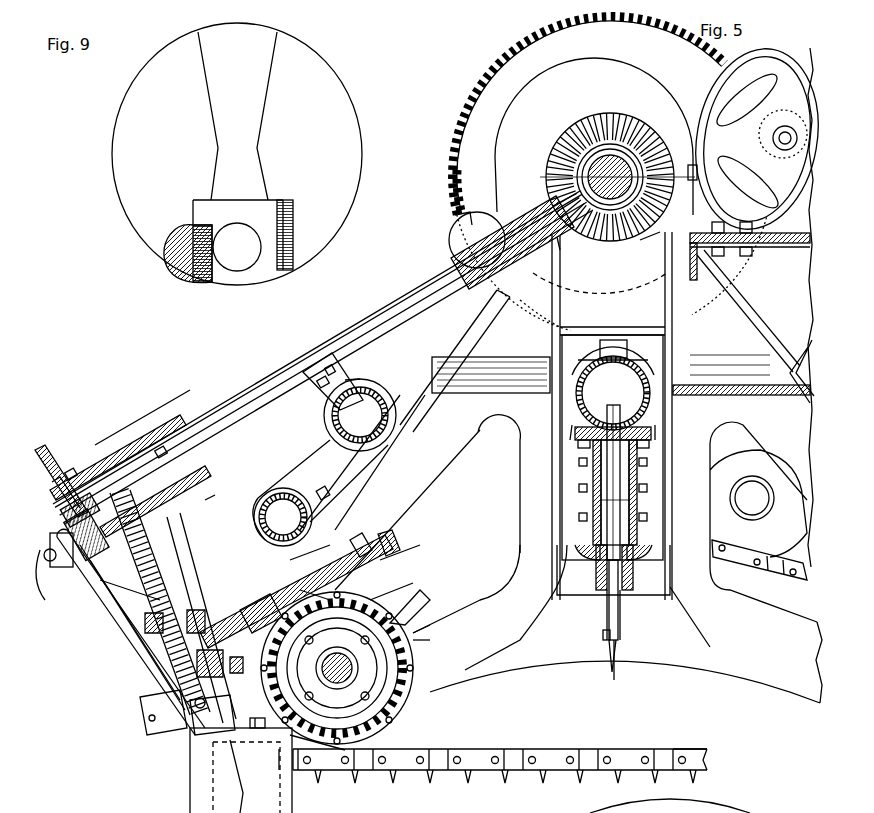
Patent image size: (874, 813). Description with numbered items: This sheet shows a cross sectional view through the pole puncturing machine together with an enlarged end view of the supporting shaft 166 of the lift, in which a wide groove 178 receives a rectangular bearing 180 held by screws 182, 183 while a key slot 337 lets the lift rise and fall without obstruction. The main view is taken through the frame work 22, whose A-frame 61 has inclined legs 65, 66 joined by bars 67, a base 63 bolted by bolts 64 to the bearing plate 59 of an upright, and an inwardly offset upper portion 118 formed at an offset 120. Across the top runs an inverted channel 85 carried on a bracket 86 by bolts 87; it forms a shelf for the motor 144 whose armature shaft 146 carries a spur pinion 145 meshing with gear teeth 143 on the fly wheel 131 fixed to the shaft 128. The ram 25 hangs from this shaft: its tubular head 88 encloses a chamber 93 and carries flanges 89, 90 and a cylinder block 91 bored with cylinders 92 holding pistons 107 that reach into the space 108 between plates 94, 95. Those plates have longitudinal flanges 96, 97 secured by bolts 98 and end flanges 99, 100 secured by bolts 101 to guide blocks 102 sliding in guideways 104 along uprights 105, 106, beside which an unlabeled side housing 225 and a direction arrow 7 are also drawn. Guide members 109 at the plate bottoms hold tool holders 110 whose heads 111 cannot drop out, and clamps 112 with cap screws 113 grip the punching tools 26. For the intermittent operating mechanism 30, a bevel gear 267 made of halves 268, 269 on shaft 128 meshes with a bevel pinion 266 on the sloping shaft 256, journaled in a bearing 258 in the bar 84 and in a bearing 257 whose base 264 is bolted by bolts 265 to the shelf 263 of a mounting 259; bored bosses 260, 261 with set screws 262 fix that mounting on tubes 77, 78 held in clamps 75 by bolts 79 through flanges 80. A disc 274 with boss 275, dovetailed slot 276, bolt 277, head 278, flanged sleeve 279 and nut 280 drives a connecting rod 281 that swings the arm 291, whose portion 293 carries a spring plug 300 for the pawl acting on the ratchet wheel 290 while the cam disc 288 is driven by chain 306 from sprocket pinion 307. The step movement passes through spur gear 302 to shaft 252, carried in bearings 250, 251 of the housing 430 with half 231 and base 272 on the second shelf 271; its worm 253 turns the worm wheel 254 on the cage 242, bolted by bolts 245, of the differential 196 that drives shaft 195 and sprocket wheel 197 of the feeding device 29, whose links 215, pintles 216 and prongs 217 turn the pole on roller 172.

In FIG. 9, the key slot 337 is at (230, 97).
In FIG. 9, the shaft 166 is at (137, 147).
In FIG. 9, the groove 178 is at (192, 200).
In FIG. 9, the bearing 180 is at (268, 213).
In FIG. 9, the screw 183 is at (293, 236).
In FIG. 9, the screw 182 is at (195, 274).
In FIG. 5, the fly wheel 131 is at (515, 72).
In FIG. 5, the gear teeth 143 is at (470, 100).
In FIG. 5, the motor 144 is at (717, 95).
In FIG. 5, the spur pinion 145 is at (747, 141).
In FIG. 5, the armature shaft 146 is at (786, 150).
In FIG. 5, the bevel gear 267 is at (580, 140).
In FIG. 5, the shaft 128 is at (615, 170).
In FIG. 5, the half of bevel gear 268 is at (565, 150).
In FIG. 5, the bevel pinion 266 is at (575, 237).
In FIG. 5, the half of bevel gear 269 is at (630, 232).
In FIG. 5, the bearing 258 is at (470, 212).
In FIG. 5, the bar 84 is at (460, 222).
In FIG. 5, the bolt 87 is at (745, 258).
In FIG. 5, the inverted channel 85 is at (790, 247).
In FIG. 5, the bracket 86 is at (760, 325).
In FIG. 5, the inclined leg 65 is at (775, 405).
In FIG. 5, the tubular head 88 is at (650, 393).
In FIG. 5, the ram 25 is at (660, 345).
In FIG. 5, the upper portion of A-frame 118 is at (510, 325).
In FIG. 5, the bore 92 is at (615, 417).
In FIG. 5, the chamber 93 is at (660, 373).
In FIG. 5, the flange 89 is at (578, 428).
In FIG. 5, the flange 90 is at (655, 432).
In FIG. 5, the bolt 98 is at (580, 425).
In FIG. 5, the longitudinal flange 96 is at (590, 440).
In FIG. 5, the longitudinal flange 97 is at (640, 443).
In FIG. 5, the cylinder block 91 is at (605, 455).
In FIG. 5, the bolt 101 is at (583, 462).
In FIG. 5, the piston 107 is at (585, 487).
In FIG. 5, the end flange 99 is at (583, 500).
In FIG. 5, the upright 105 is at (515, 520).
In FIG. 5, the space 108 is at (600, 530).
In FIG. 5, the guide block 102 is at (652, 505).
In FIG. 5, the end flange 100 is at (648, 540).
In FIG. 5, the side housing 225 is at (780, 480).
In FIG. 5, the upright 106 is at (715, 470).
In FIG. 5, the plate 95 is at (668, 555).
In FIG. 5, the plate 94 is at (575, 560).
In FIG. 5, the guide member 109 is at (605, 595).
In FIG. 5, the tool holder 110 is at (622, 612).
In FIG. 5, the head of tool holder 111 is at (600, 600).
In FIG. 5, the cap screw 113 is at (605, 640).
In FIG. 5, the clamp 112 is at (612, 660).
In FIG. 5, the punching tool 26 is at (622, 660).
In FIG. 5, the guideway 104 is at (573, 600).
In FIG. 5, the bar 67 is at (792, 655).
In FIG. 5, the inward offset 120 is at (485, 393).
In FIG. 5, the inclined leg 66 is at (445, 405).
In FIG. 5, the A-frame 61 is at (430, 408).
In FIG. 5, the shaft 256 is at (260, 385).
In FIG. 5, the bored boss 260 is at (380, 390).
In FIG. 5, the tube 78 is at (276, 490).
In FIG. 5, the mounting 259 is at (255, 505).
In FIG. 5, the bored boss 261 is at (290, 505).
In FIG. 5, the set screw 262 is at (327, 495).
In FIG. 5, the flange 80 is at (313, 360).
In FIG. 5, the clamp 75 is at (335, 370).
In FIG. 5, the bolt 79 is at (335, 350).
In FIG. 5, the tube 77 is at (362, 378).
In FIG. 5, the bearing 257 is at (137, 440).
In FIG. 5, the base 264 is at (195, 452).
In FIG. 5, the bolt 265 is at (165, 446).
In FIG. 5, the sprocket pinion 307 is at (102, 430).
In FIG. 5, the shelf 263 is at (205, 500).
In FIG. 5, the disc 274 is at (40, 452).
In FIG. 5, the boss 275 is at (62, 470).
In FIG. 5, the intermittent operating mechanism 30 is at (117, 597).
In FIG. 5, the dovetailed slot 276 is at (78, 535).
In FIG. 5, the bolt 277 is at (50, 563).
In FIG. 5, the dovetailed head 278 is at (92, 552).
In FIG. 5, the flanged sleeve 279 is at (112, 585).
In FIG. 5, the nut 280 is at (100, 600).
In FIG. 5, the connecting rod 281 is at (133, 653).
In FIG. 5, the disc 288 is at (150, 640).
In FIG. 5, the ratchet wheel 290 is at (170, 640).
In FIG. 5, the arm 291 is at (180, 680).
In FIG. 5, the chain 306 is at (143, 537).
In FIG. 5, the spur gear 302 is at (173, 640).
In FIG. 5, the portion of arm 293 is at (200, 718).
In FIG. 5, the plug 300 is at (206, 704).
In FIG. 5, the bearing 250 is at (240, 550).
In FIG. 5, the worm 253 is at (265, 545).
In FIG. 5, the direction 7 is at (258, 553).
In FIG. 5, the shaft 252 is at (385, 556).
In FIG. 5, the bearing 251 is at (355, 540).
In FIG. 5, the second shelf 271 is at (330, 520).
In FIG. 5, the base 272 is at (393, 557).
In FIG. 5, the shaft 195 is at (410, 657).
In FIG. 5, the cage 242 is at (440, 695).
In FIG. 5, the bolt 245 is at (440, 717).
In FIG. 5, the differential 196 is at (430, 600).
In FIG. 5, the sprocket wheel 197 is at (430, 585).
In FIG. 5, the housing 430 is at (432, 625).
In FIG. 5, the half of housing 231 is at (432, 640).
In FIG. 5, the worm wheel 254 is at (368, 727).
In FIG. 5, the feeding device 29 is at (505, 750).
In FIG. 5, the pintle 216 is at (566, 757).
In FIG. 5, the link 215 is at (690, 752).
In FIG. 5, the prong 217 is at (520, 785).
In FIG. 5, the roller 172 is at (703, 805).
In FIG. 5, the frame work 22 is at (190, 793).
In FIG. 5, the bearing plate 59 is at (240, 776).
In FIG. 5, the base 63 is at (230, 737).
In FIG. 5, the bolt 64 is at (255, 730).